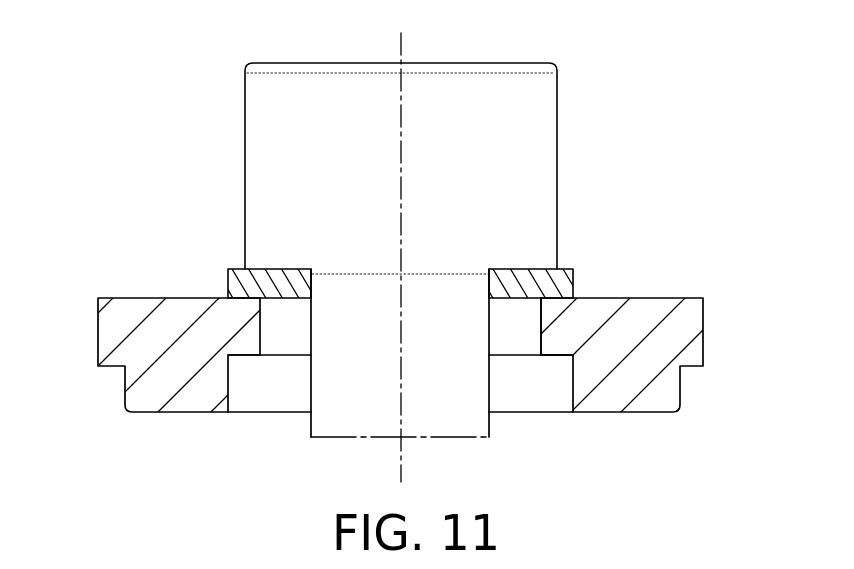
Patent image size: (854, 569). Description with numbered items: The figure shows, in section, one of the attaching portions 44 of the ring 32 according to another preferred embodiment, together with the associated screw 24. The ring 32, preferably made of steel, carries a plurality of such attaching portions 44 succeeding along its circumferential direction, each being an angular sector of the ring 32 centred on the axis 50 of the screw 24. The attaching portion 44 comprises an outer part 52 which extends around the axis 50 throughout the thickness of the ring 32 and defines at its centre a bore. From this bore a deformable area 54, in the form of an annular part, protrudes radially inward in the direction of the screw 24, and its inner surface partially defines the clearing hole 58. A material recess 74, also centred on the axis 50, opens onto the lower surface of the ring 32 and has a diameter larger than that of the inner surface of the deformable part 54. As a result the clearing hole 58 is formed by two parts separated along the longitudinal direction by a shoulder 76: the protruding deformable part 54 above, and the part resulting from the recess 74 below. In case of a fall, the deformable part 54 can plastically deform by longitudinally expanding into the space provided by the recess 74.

The screw 24 is at (272, 152).
The ring 32 is at (690, 288).
The attaching portion 44 is at (107, 408).
The axis 50 is at (401, 52).
The outer part 52 is at (125, 323).
The deformable area 54 is at (238, 322).
The clearing hole 58 is at (229, 369).
The material recess 74 is at (557, 372).
The shoulder 76 is at (555, 353).